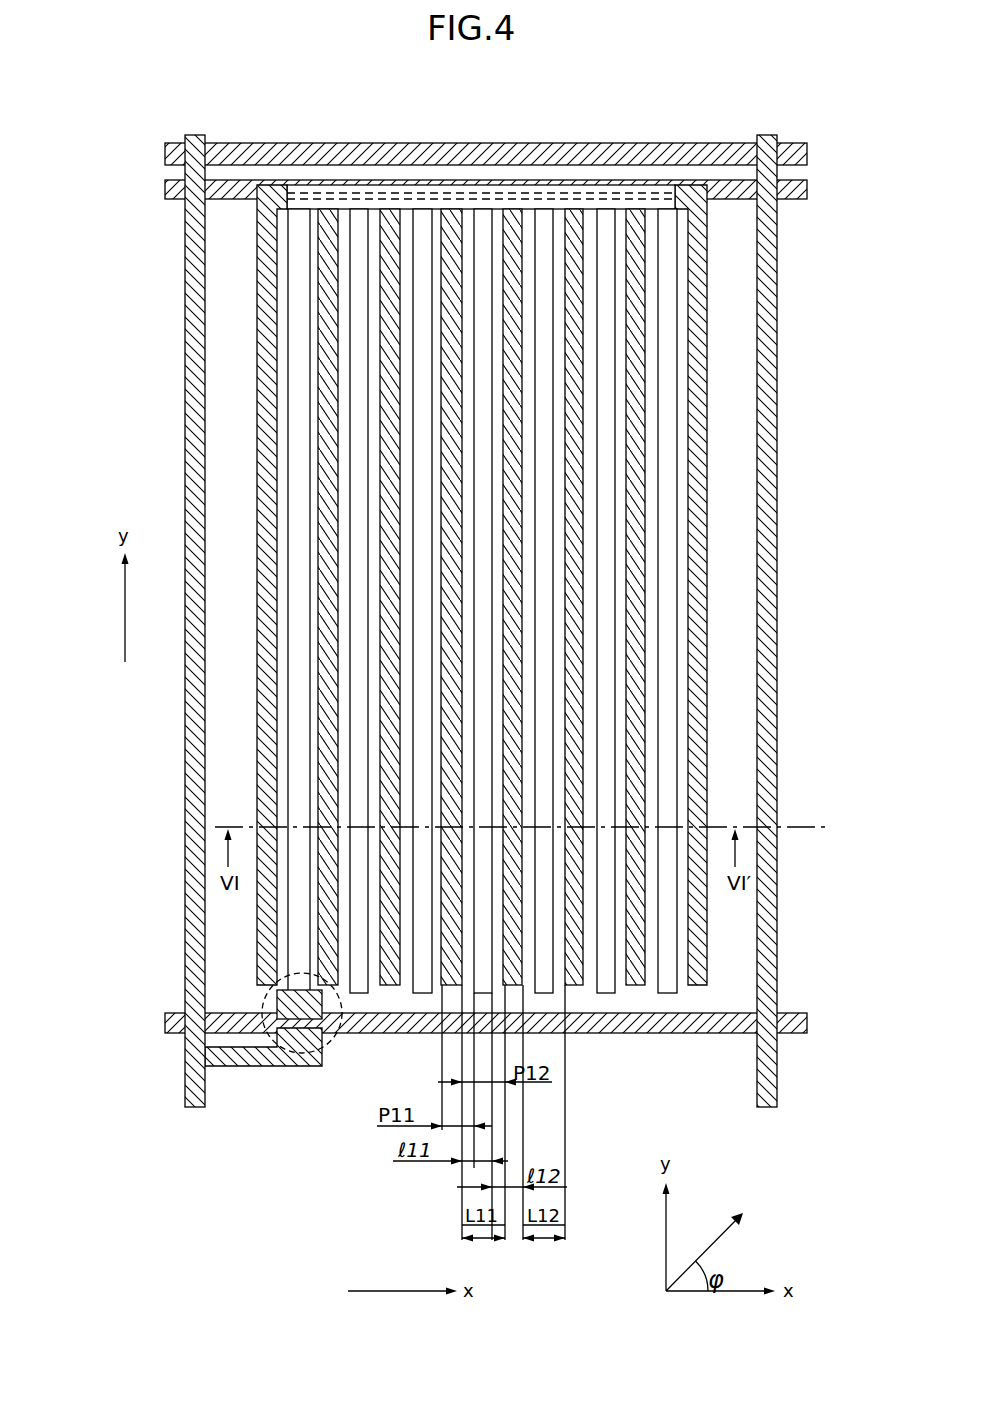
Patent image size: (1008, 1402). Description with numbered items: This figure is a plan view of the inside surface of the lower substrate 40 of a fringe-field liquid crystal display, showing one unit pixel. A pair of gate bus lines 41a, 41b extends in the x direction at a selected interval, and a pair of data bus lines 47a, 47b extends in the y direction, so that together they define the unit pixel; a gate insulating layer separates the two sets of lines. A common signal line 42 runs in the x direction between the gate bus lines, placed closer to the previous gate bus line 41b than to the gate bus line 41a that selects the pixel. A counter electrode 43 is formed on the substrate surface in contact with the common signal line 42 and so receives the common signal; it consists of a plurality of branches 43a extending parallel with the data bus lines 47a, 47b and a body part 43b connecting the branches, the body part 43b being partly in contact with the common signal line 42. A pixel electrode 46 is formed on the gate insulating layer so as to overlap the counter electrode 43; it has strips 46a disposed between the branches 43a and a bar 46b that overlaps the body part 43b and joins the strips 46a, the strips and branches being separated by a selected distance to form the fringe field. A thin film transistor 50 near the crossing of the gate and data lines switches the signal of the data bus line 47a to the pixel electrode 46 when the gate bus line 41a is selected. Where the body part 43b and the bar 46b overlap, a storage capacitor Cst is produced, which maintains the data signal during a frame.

The lower substrate 40 is at (706, 1091).
The gate bus line 41a is at (807, 1024).
The gate bus line 41b is at (807, 152).
The common signal line 42 is at (807, 188).
The counter electrode 43 is at (597, 585).
The branch 43a is at (273, 668).
The body part 43b is at (707, 209).
The pixel electrode 46 is at (362, 589).
The strip 46a is at (257, 205).
The bar 46b is at (665, 423).
The data bus line 47a is at (195, 1108).
The data bus line 47b is at (767, 1108).
The thin film transistor 50 is at (286, 1049).
The storage capacitor Cst is at (466, 194).